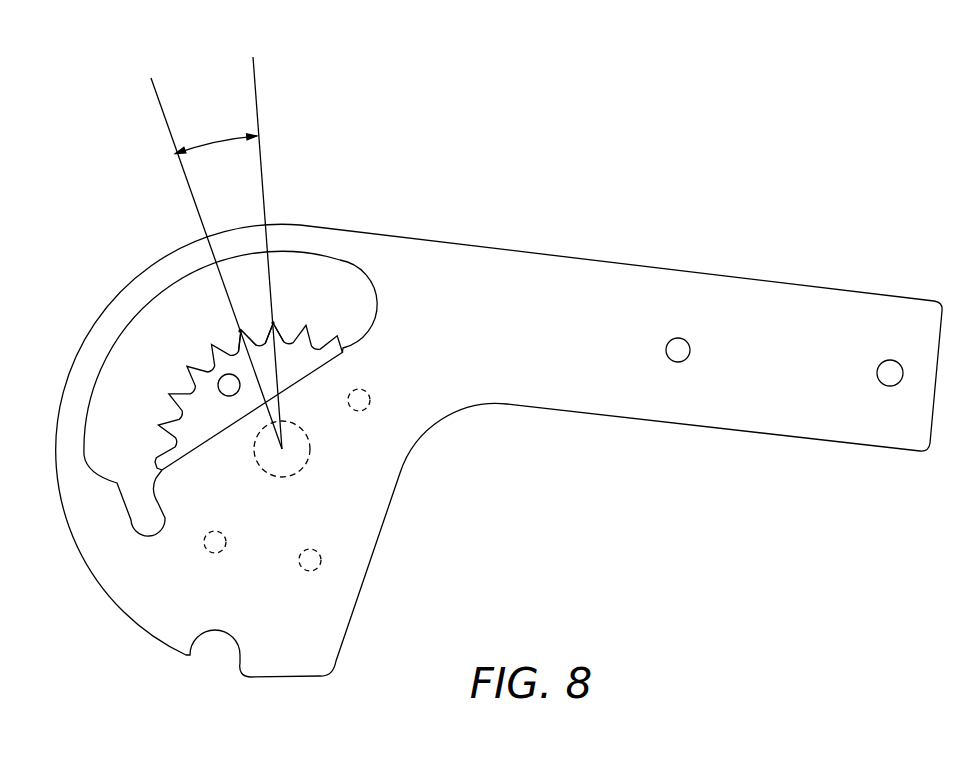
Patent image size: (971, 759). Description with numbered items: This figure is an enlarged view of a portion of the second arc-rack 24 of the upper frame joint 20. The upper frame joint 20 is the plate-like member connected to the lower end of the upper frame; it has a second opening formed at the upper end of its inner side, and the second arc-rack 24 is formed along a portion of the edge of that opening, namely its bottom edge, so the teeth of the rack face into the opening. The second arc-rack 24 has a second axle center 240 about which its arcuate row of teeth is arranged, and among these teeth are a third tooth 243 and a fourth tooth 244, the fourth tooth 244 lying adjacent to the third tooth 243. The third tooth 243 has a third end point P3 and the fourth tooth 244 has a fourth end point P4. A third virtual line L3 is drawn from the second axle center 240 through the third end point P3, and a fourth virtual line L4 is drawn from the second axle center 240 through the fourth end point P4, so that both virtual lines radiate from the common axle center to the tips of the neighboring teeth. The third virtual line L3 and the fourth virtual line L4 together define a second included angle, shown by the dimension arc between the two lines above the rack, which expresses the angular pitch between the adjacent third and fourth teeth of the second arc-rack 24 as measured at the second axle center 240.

The upper frame joint 20 is at (625, 297).
The second arc-rack 24 is at (307, 330).
The second axle center 240 is at (282, 449).
The third tooth 243 is at (236, 336).
The fourth tooth 244 is at (283, 333).
The third end point P3 is at (239, 331).
The fourth end point P4 is at (273, 323).
The third virtual line L3 is at (209, 250).
The fourth virtual line L4 is at (261, 240).